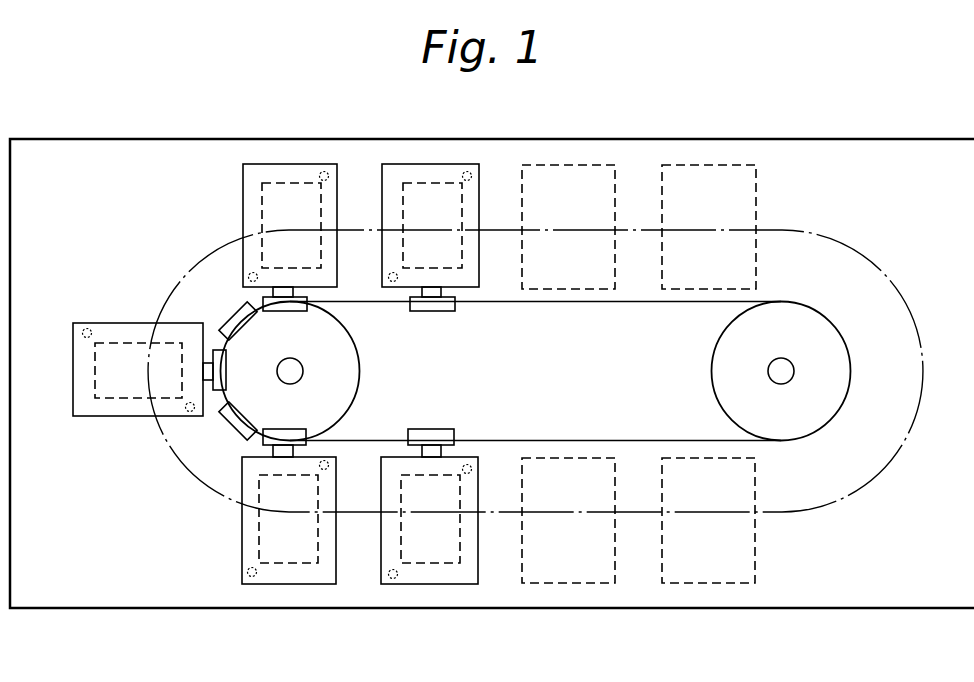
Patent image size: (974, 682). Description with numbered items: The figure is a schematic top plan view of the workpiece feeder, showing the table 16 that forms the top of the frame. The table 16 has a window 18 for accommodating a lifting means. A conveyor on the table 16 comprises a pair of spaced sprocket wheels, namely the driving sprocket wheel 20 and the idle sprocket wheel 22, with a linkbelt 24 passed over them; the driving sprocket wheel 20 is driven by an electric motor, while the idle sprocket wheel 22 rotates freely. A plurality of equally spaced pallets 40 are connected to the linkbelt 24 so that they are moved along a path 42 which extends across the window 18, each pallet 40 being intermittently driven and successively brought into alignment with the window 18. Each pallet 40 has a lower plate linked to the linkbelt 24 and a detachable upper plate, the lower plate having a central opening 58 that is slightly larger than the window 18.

The table 16 is at (907, 150).
The window 18 is at (115, 398).
The driving sprocket wheel 20 is at (355, 358).
The idle sprocket wheel 22 is at (815, 318).
The linkbelt 24 is at (572, 303).
The pallet 40 is at (306, 165).
The path 42 is at (860, 495).
The central opening 58 is at (278, 564).